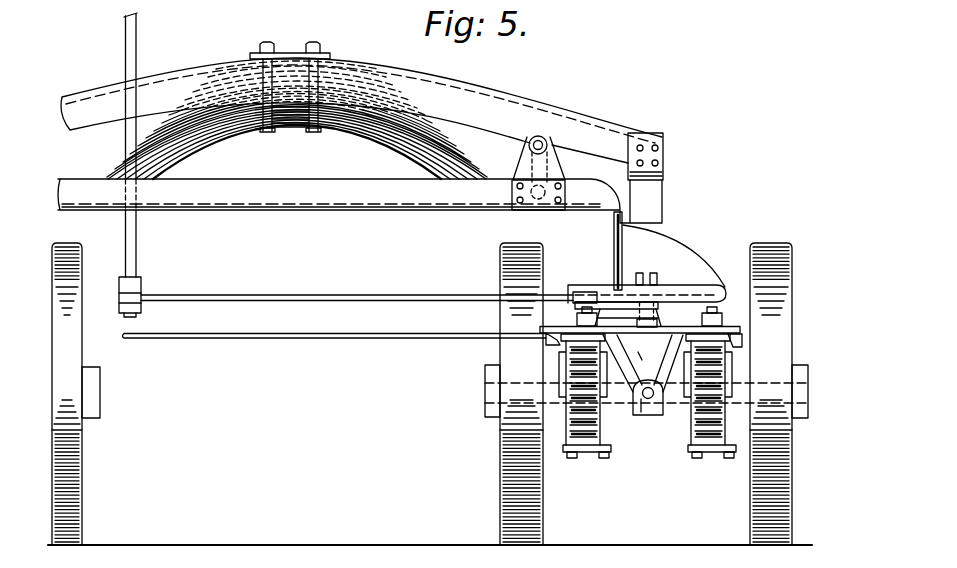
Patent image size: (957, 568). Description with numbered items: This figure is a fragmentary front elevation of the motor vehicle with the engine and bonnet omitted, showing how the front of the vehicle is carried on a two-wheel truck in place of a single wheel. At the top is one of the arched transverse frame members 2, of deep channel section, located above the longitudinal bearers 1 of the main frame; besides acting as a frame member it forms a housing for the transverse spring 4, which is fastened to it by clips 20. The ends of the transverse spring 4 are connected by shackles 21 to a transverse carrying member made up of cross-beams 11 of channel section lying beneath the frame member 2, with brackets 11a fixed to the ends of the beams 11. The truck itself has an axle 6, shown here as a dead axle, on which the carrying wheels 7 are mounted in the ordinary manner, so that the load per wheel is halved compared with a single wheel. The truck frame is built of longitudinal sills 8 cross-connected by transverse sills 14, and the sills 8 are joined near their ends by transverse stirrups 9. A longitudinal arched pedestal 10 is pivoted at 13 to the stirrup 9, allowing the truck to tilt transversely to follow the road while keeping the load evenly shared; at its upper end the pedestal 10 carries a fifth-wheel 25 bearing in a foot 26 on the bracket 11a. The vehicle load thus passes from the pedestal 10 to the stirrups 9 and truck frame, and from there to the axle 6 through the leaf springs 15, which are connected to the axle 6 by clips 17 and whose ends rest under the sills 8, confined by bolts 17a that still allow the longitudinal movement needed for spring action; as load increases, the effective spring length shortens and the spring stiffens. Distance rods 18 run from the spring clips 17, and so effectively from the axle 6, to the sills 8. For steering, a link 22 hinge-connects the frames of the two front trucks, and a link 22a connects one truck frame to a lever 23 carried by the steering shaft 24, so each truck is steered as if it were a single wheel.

The longitudinal bearer 1 is at (663, 205).
The transverse frame member 2 is at (502, 100).
The transverse spring 4 is at (378, 125).
The axle 6 is at (678, 397).
The carrying wheel 7 is at (68, 347).
The longitudinal sill 8 is at (540, 330).
The transverse stirrup 9 is at (642, 413).
The longitudinal arched pedestal 10 is at (637, 353).
The cross-beam 11 is at (438, 208).
The bracket 11a is at (617, 258).
The pivot 13 is at (650, 412).
The transverse sill 14 is at (667, 328).
The front truck spring 15 is at (590, 426).
The spring clip 17 is at (572, 430).
The bolt 17a is at (800, 306).
The distance rod 18 is at (563, 367).
The clip 20 is at (312, 128).
The shackle 21 is at (528, 168).
The link 22 is at (333, 340).
The link 22a is at (311, 298).
The lever 23 is at (141, 307).
The steering shaft 24 is at (133, 253).
The fifth-wheel 25 is at (701, 283).
The foot 26 is at (662, 285).